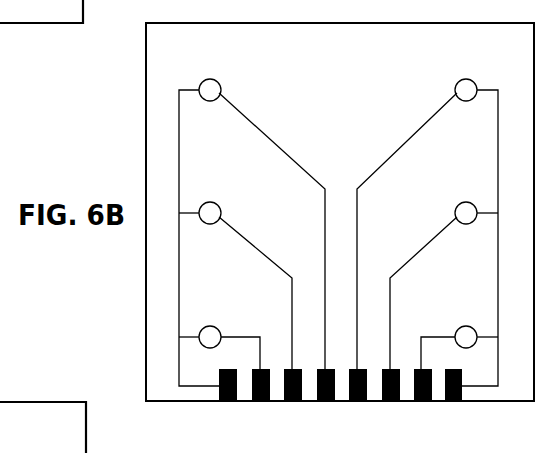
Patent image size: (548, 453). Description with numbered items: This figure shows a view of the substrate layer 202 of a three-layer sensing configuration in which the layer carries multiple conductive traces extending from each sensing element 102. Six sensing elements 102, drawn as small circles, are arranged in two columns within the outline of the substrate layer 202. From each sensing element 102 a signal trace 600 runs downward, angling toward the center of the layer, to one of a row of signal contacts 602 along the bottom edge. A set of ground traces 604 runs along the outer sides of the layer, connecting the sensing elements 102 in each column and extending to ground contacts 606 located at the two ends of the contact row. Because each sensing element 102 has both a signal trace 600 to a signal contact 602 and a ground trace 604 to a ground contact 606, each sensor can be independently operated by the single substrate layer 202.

The sensing element 102 is at (335, 204).
The substrate layer 202 is at (317, 212).
The signal traces 600 is at (338, 231).
The signal contacts 602 is at (342, 398).
The ground traces 604 is at (338, 238).
The ground contacts 606 is at (229, 403).